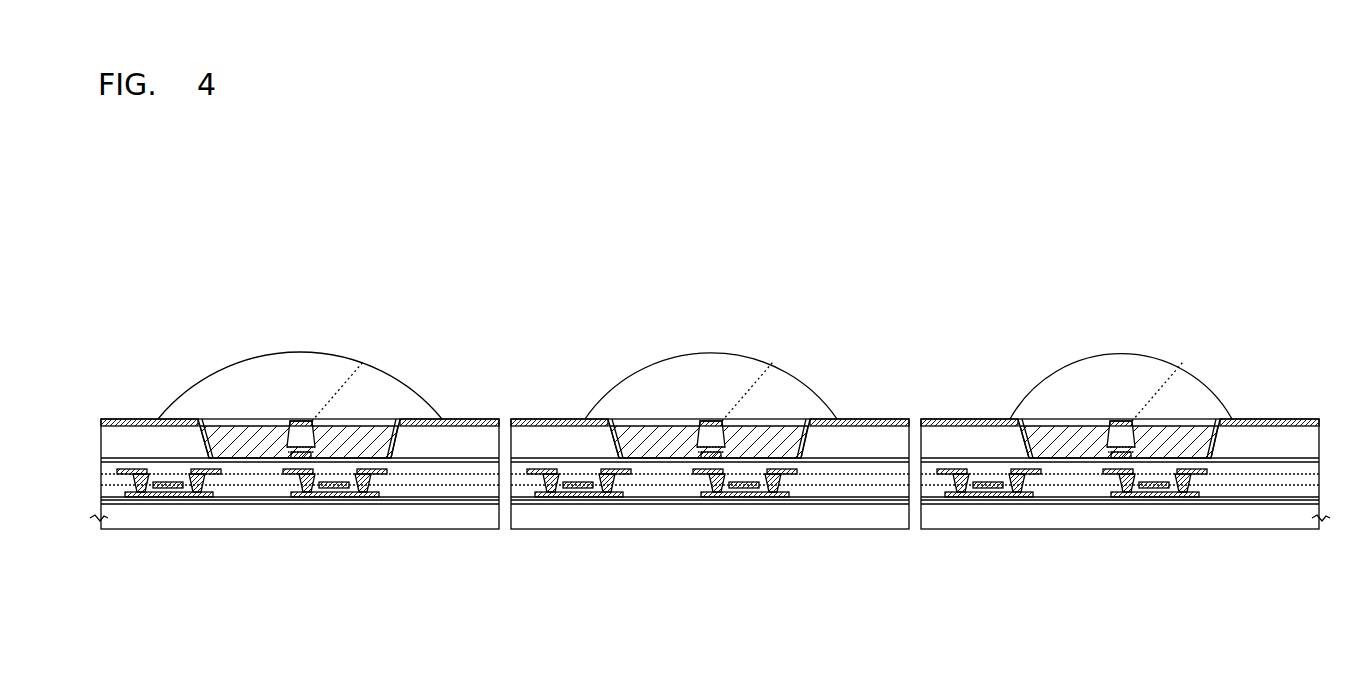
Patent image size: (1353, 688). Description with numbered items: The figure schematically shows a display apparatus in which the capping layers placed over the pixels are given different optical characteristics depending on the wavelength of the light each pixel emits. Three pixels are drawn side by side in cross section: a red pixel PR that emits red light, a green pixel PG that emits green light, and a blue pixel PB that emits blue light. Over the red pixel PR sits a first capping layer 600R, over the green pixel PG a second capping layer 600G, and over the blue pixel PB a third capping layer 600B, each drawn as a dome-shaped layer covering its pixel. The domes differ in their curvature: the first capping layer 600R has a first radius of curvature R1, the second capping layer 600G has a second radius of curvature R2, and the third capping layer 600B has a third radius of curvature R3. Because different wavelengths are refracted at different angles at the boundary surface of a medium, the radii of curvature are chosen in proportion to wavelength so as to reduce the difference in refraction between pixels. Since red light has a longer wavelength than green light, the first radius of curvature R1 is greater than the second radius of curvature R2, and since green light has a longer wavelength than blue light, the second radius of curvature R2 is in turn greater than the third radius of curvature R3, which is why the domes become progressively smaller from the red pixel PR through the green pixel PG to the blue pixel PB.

The first radius of curvature R1 is at (326, 360).
The second radius of curvature R2 is at (736, 360).
The third radius of curvature R3 is at (1146, 360).
The first capping layer 600R is at (281, 385).
The second capping layer 600G is at (719, 371).
The third capping layer 600B is at (1136, 372).
The red pixel PR is at (294, 440).
The green pixel PG is at (710, 440).
The blue pixel PB is at (1125, 440).